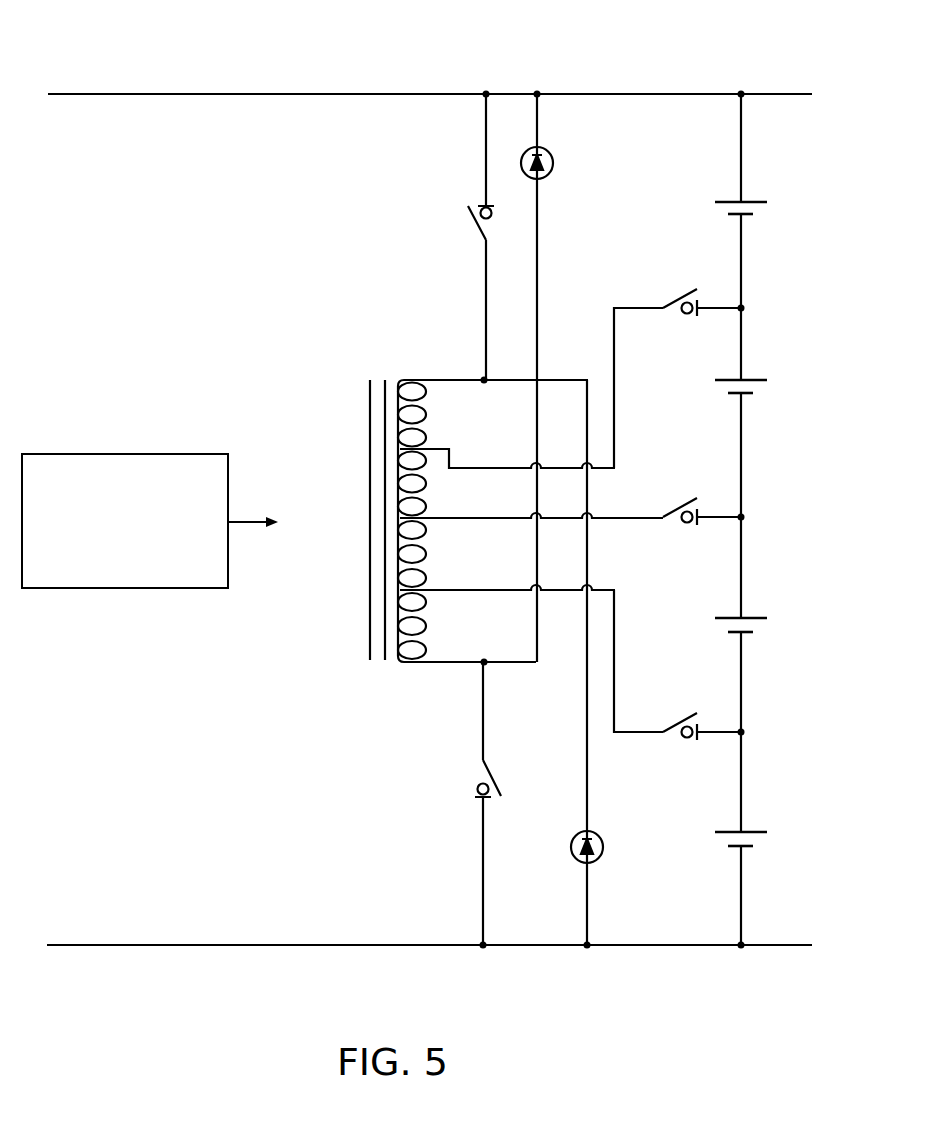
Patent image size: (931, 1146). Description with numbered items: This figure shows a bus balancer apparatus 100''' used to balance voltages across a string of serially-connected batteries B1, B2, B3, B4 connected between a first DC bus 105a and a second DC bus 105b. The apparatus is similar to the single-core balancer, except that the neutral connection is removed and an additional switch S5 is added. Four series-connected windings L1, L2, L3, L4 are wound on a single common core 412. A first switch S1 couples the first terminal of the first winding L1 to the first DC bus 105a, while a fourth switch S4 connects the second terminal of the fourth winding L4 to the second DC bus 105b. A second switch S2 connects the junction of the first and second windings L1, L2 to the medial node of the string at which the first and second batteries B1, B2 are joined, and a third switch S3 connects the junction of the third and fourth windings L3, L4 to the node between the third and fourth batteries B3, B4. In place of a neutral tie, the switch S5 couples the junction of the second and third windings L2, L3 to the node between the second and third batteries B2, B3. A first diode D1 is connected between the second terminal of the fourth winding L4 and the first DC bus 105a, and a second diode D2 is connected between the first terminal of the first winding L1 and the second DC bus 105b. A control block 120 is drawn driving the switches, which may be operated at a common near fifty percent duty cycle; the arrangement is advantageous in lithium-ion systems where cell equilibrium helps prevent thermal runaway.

The bus balancer apparatus 100''' is at (417, 494).
The first DC bus 105a is at (187, 94).
The second DC bus 105b is at (140, 945).
The controller 120 is at (125, 454).
The single common core 412 is at (368, 633).
The first winding L1 is at (424, 415).
The second winding L2 is at (424, 484).
The third winding L3 is at (424, 554).
The fourth winding L4 is at (424, 626).
The first switch S1 is at (469, 237).
The second switch S2 is at (677, 368).
The third switch S3 is at (677, 665).
The fourth switch S4 is at (477, 803).
The switch S5 is at (702, 501).
The first diode D1 is at (550, 378).
The second diode D2 is at (600, 662).
The battery B1 is at (753, 205).
The battery B2 is at (753, 385).
The battery B3 is at (759, 622).
The battery B4 is at (751, 835).